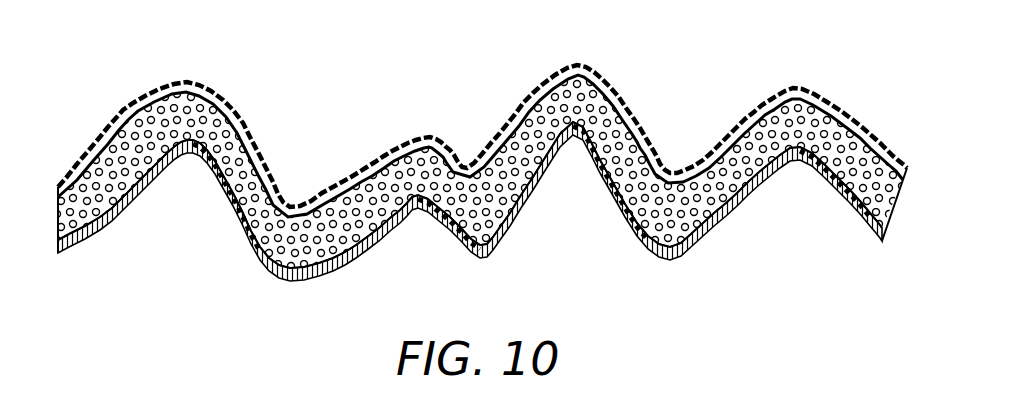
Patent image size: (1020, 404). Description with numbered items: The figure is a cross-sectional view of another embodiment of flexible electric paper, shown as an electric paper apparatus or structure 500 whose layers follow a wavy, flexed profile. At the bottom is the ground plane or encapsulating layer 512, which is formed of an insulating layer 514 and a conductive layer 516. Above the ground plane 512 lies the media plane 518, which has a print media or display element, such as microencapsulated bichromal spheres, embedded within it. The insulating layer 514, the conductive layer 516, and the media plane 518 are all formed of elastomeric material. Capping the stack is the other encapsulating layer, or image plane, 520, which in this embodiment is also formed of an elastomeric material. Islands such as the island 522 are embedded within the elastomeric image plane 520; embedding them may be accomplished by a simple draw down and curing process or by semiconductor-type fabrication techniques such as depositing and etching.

The electric paper apparatus 500 is at (469, 43).
The ground plane 512 is at (58, 250).
The insulating layer 514 is at (170, 160).
The conductive layer 516 is at (250, 267).
The media plane 518 is at (55, 245).
The image plane 520 is at (397, 147).
The island 522 is at (255, 117).